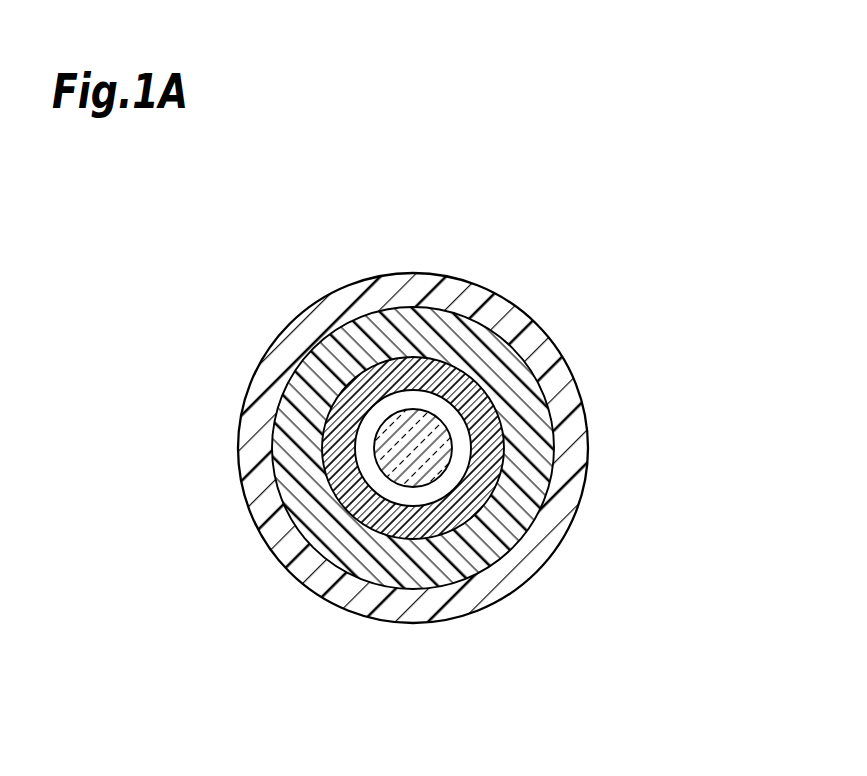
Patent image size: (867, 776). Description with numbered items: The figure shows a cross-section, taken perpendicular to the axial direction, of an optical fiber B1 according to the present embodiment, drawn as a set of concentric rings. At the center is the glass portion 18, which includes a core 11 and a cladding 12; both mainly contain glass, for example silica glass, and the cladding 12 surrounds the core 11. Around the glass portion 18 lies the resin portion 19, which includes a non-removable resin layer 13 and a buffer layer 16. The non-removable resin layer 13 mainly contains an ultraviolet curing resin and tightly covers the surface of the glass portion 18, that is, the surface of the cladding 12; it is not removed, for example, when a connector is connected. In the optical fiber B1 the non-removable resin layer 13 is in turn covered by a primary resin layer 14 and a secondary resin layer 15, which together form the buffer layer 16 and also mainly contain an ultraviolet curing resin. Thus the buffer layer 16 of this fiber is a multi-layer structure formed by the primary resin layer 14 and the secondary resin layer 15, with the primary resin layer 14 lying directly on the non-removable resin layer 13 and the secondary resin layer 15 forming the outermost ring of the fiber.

The core 11 is at (440, 438).
The cladding 12 is at (460, 458).
The non-removable resin layer 13 is at (332, 409).
The primary resin layer 14 is at (280, 481).
The secondary resin layer 15 is at (290, 548).
The buffer layer 16 is at (176, 503).
The glass portion 18 is at (647, 367).
The resin portion 19 is at (129, 398).
The optical fiber B1 is at (546, 288).